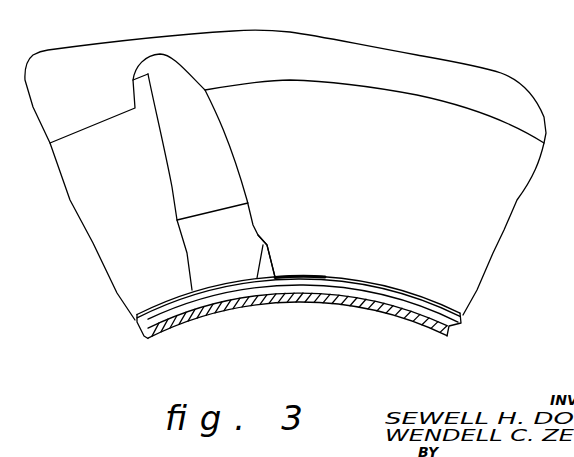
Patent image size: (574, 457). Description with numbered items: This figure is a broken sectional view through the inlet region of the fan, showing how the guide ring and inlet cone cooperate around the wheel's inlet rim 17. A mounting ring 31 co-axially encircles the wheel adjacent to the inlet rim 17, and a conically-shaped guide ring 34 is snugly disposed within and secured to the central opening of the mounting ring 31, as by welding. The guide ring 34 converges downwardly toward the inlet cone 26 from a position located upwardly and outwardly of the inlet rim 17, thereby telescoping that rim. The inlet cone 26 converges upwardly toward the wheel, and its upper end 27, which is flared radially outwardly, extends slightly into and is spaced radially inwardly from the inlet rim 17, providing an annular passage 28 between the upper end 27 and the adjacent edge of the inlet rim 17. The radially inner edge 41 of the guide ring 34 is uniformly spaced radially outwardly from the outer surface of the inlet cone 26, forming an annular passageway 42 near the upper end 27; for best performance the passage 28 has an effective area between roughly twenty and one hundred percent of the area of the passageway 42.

The mounting ring 31 is at (72, 58).
The conically-shaped guide ring 34 is at (135, 163).
The inlet rim 17 is at (241, 232).
The annular passage 28 is at (263, 245).
The annular passageway 42 is at (325, 281).
The upper end of the inlet cone 27 is at (367, 297).
The inlet cone 26 is at (410, 318).
The radially inner edge of the guide ring 41 is at (133, 322).